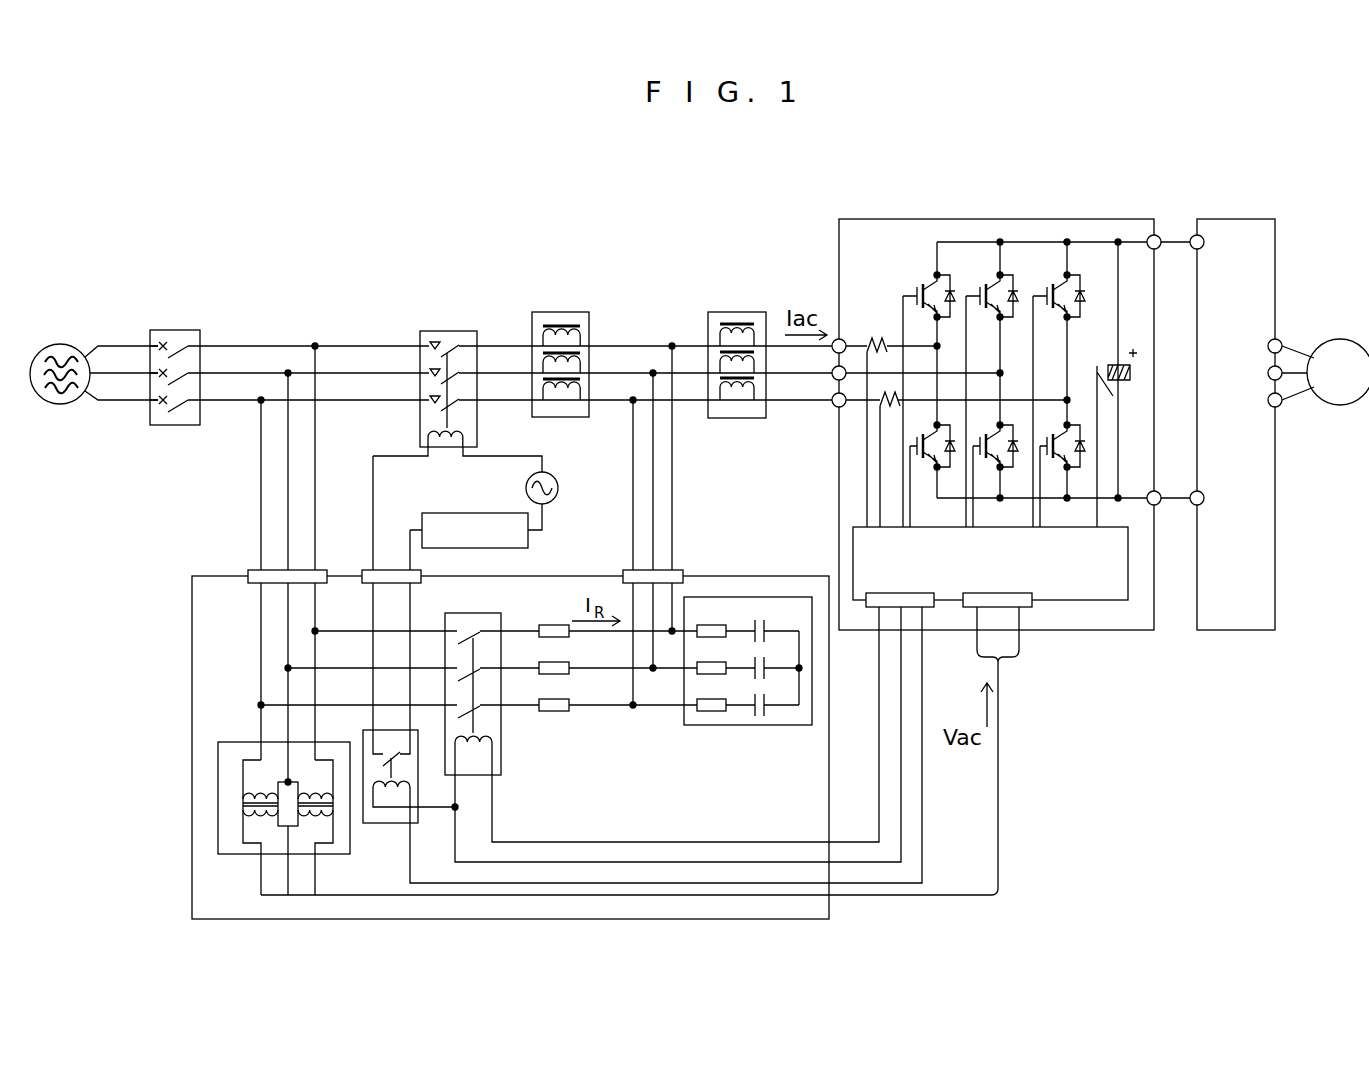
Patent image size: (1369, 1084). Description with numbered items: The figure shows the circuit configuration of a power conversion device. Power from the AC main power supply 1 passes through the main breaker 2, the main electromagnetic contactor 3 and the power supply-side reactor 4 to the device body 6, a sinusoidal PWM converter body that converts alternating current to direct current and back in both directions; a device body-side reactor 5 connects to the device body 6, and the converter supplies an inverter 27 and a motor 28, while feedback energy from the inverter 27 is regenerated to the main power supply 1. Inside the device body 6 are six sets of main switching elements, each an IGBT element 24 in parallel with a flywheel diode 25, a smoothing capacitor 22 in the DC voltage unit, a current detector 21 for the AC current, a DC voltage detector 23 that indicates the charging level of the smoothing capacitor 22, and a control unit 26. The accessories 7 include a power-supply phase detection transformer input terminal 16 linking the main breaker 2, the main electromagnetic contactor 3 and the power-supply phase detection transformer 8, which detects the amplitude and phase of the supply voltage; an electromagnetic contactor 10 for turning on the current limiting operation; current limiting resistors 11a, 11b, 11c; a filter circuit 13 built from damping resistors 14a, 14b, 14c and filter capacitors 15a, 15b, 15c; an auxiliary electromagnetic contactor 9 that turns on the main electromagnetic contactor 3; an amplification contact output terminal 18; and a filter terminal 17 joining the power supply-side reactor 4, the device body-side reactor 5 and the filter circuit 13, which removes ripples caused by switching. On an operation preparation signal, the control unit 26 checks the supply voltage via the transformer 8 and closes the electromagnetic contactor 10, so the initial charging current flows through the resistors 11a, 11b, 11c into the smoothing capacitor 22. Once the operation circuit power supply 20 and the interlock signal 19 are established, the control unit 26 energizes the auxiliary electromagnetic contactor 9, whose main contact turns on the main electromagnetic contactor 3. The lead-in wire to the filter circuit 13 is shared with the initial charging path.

The AC main power supply 1 is at (64, 342).
The main breaker 2 is at (178, 330).
The main electromagnetic contactor 3 is at (440, 331).
The power supply-side reactor 4 is at (560, 312).
The device body-side reactor 5 is at (735, 312).
The device body 6 is at (1012, 458).
The accessories 7 is at (192, 682).
The power-supply phase detection transformer 8 is at (240, 742).
The auxiliary electromagnetic contactor for turning on main electromagnetic contacto 9 is at (393, 823).
The electromagnetic contactor for turning on current limiting operation 10 is at (472, 613).
The current limiting resistor 11a is at (550, 625).
The current limiting resistor 11b is at (563, 662).
The current limiting resistor 11c is at (563, 699).
The filter circuit 13 is at (712, 675).
The damping resistor 14a is at (713, 621).
The damping resistor 14b is at (713, 658).
The damping resistor 14c is at (712, 695).
The filter capacitor 15a is at (765, 623).
The filter capacitor 15b is at (765, 661).
The filter capacitor 15c is at (764, 698).
The power-supply phase detection transformer input terminal 16 is at (250, 570).
The filter terminal 17 is at (680, 570).
The amplification contact output terminal for turning on main electromagnetic contac 18 is at (365, 570).
The interlock signal 19 is at (428, 513).
The operation circuit power supply 20 is at (558, 482).
The current detector 21 is at (876, 343).
The smoothing capacitor 22 is at (1134, 371).
The DC voltage detector 23 is at (1097, 362).
The IGBT element 24 is at (926, 286).
The flywheel diode 25 is at (953, 292).
The control unit 26 is at (1065, 600).
The inverter 27 is at (1238, 632).
The motor 28 is at (1337, 405).